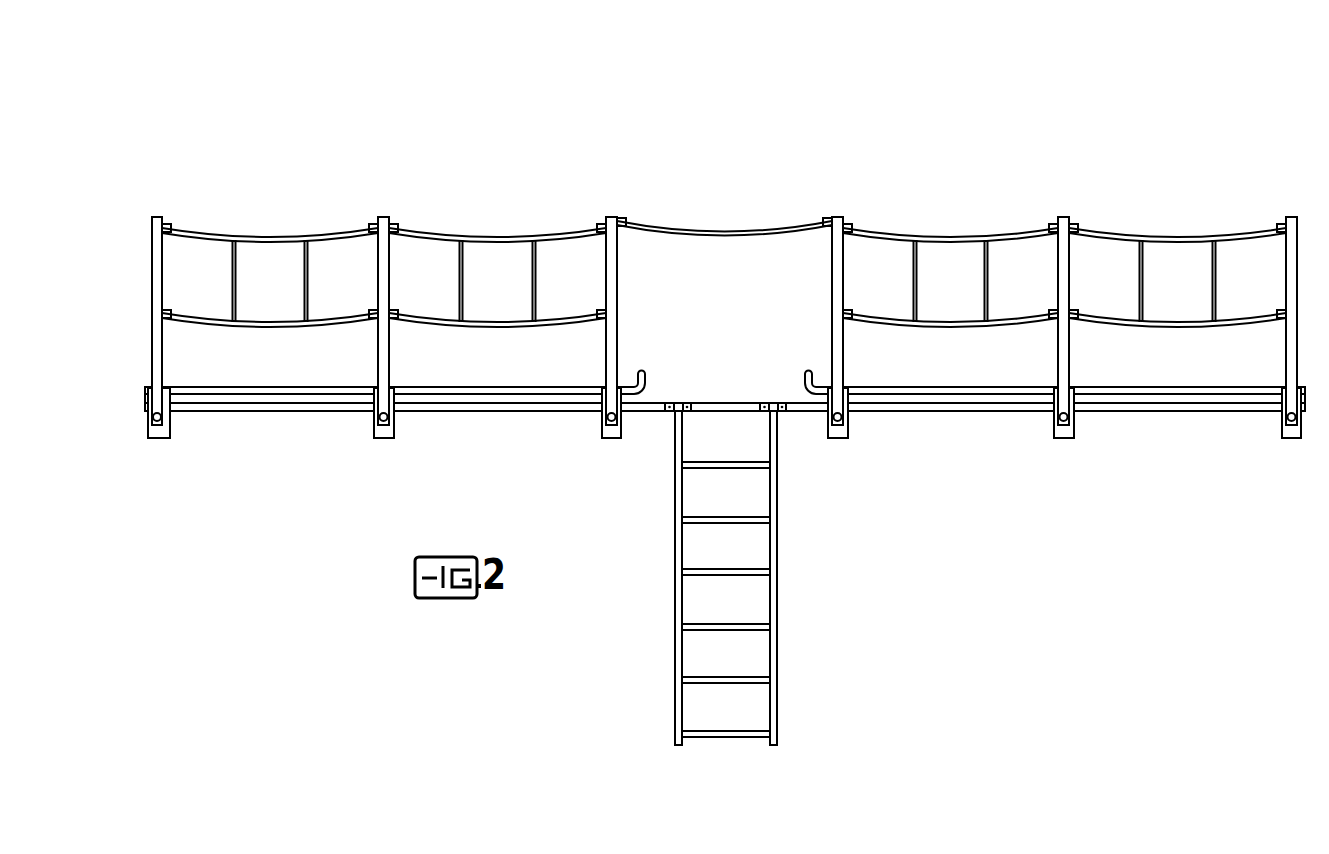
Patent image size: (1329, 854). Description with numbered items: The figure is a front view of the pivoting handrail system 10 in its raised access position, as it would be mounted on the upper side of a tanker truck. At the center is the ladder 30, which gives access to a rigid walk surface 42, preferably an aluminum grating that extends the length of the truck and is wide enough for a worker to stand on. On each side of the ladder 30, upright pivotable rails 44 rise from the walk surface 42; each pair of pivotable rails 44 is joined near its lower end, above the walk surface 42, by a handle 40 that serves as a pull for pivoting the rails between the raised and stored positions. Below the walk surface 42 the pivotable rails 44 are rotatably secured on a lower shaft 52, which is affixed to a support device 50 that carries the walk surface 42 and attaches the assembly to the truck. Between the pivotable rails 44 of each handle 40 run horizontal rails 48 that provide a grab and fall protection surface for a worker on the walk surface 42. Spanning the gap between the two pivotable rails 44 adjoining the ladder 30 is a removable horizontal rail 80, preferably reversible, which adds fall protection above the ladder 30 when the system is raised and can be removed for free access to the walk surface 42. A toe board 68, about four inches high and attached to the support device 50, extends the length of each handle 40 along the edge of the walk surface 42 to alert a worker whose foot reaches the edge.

The pivoting handrail system 10 is at (725, 426).
The ladder 30 is at (773, 566).
The handle 40 is at (462, 392).
The walk surface 42 is at (305, 412).
The pivotable rail 44 is at (162, 254).
The horizontal rail 48 is at (245, 234).
The support device 50 is at (160, 435).
The lower shaft 52 is at (377, 424).
The toe board 68 is at (236, 396).
The removable horizontal rail 80 is at (708, 234).